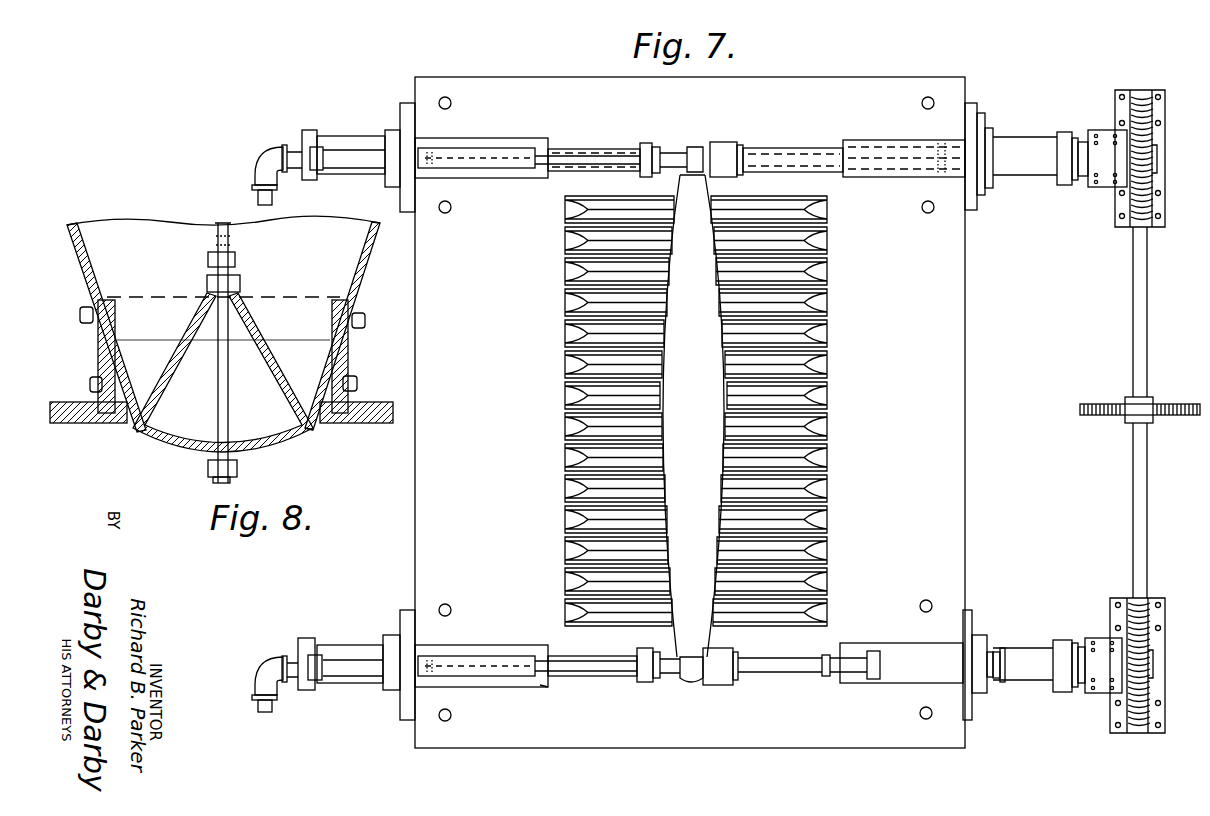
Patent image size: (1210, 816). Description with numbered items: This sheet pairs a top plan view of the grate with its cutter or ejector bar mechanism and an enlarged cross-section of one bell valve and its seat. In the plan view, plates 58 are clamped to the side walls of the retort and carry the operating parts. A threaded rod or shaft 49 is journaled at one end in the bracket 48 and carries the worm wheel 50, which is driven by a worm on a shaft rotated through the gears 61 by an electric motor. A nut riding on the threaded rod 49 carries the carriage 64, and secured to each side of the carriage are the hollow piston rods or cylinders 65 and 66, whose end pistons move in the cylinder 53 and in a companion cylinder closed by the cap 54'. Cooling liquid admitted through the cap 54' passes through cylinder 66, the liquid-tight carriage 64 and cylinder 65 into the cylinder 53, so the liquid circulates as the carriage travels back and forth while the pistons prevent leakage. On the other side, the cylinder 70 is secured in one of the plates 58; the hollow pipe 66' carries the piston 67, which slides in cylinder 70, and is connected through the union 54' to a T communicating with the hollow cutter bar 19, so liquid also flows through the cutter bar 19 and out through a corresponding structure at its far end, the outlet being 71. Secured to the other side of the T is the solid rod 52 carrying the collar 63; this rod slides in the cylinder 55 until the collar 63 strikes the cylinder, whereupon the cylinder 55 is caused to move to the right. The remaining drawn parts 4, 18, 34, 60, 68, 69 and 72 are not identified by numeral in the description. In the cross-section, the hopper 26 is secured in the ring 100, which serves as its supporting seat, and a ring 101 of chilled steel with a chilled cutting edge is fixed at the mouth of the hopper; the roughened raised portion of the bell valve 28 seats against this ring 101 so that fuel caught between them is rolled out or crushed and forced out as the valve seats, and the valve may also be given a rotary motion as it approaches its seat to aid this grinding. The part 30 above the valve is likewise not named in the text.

In FIG. 7, the frame 4 is at (690, 412).
In FIG. 7, the plates 18 is at (822, 581).
In FIG. 7, the hollow cutter bar 19 is at (693, 414).
In FIG. 7, the rod end 34 is at (545, 688).
In FIG. 7, the bracket 48 is at (1160, 127).
In FIG. 7, the threaded rod 49 is at (800, 156).
In FIG. 7, the worm wheel 50 is at (1112, 229).
In FIG. 7, the solid rod 52 is at (808, 674).
In FIG. 7, the cylinder 53 is at (873, 681).
In FIG. 7, the cap 54' is at (670, 407).
In FIG. 7, the cylinder 55 is at (898, 661).
In FIG. 7, the plates 58 is at (410, 110).
In FIG. 7, the shaft 60 is at (1147, 521).
In FIG. 7, the gears 61 is at (1112, 417).
In FIG. 7, the collar 63 is at (829, 657).
In FIG. 7, the carriage 64 is at (721, 686).
In FIG. 7, the hollow piston rod 65 is at (703, 150).
In FIG. 7, the hollow piston rod 66 is at (597, 403).
In FIG. 7, the hollow pipe 66' is at (592, 654).
In FIG. 7, the piston 67 is at (445, 160).
In FIG. 7, the rod 68 is at (575, 152).
In FIG. 7, the housing 69 is at (520, 140).
In FIG. 7, the cylinder 70 is at (290, 683).
In FIG. 7, the outlet 71 is at (272, 182).
In FIG. 7, the handwheel 72 is at (1006, 661).
In FIG. 8, the hopper 26 is at (92, 265).
In FIG. 8, the valve 28 is at (196, 452).
In FIG. 8, the shaft 30 is at (230, 233).
In FIG. 8, the ring 100 is at (343, 350).
In FIG. 8, the ring 101 is at (316, 396).